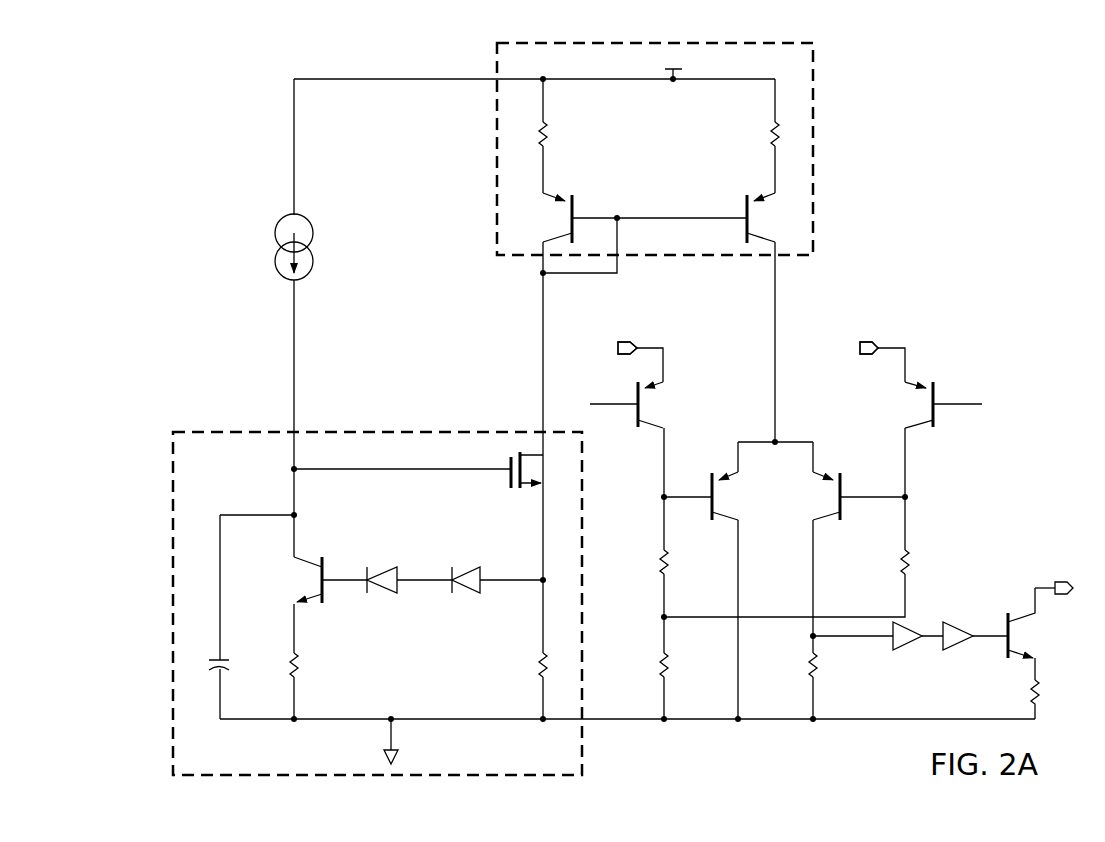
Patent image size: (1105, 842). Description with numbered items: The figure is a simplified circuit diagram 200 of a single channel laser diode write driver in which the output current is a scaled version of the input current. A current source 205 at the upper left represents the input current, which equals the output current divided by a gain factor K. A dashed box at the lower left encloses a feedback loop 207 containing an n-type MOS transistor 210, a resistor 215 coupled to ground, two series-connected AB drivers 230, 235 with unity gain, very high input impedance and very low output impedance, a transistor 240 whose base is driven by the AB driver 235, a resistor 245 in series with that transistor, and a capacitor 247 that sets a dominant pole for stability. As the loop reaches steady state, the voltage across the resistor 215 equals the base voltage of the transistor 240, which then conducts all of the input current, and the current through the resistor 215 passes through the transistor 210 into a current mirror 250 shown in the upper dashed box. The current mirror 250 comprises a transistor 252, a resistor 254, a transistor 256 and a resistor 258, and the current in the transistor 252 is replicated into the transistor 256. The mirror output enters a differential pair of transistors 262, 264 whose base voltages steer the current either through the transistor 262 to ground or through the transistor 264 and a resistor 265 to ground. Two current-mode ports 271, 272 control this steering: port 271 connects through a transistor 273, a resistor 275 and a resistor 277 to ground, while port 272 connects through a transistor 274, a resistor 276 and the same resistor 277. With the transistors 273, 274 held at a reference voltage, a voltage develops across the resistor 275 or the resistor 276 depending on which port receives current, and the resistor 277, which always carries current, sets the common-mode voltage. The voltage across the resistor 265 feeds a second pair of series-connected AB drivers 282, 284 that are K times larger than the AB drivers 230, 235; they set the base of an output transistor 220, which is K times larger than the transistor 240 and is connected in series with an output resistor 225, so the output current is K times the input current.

The circuit diagram 200 is at (990, 153).
The current source 205 is at (314, 246).
The feedback loop 207 is at (221, 431).
The transistor 210 is at (510, 467).
The resistor 215 is at (538, 665).
The output transistor 220 is at (1005, 632).
The output resistor 225 is at (1045, 690).
The AB driver 230 is at (467, 590).
The AB driver 235 is at (380, 572).
The transistor 240 is at (326, 598).
The resistor 245 is at (302, 665).
The capacitor 247 is at (224, 657).
The current mirror 250 is at (496, 72).
The transistor 252 is at (578, 200).
The resistor 254 is at (550, 131).
The transistor 256 is at (742, 200).
The resistor 258 is at (768, 131).
The transistor 262 is at (702, 485).
The transistor 264 is at (848, 485).
The resistor 265 is at (822, 663).
The current-mode port 271 is at (622, 341).
The current-mode port 272 is at (868, 341).
The transistor 273 is at (636, 388).
The transistor 274 is at (938, 414).
The resistor 275 is at (672, 560).
The resistor 276 is at (912, 560).
The resistor 277 is at (672, 663).
The AB driver 282 is at (908, 646).
The AB driver 284 is at (960, 645).